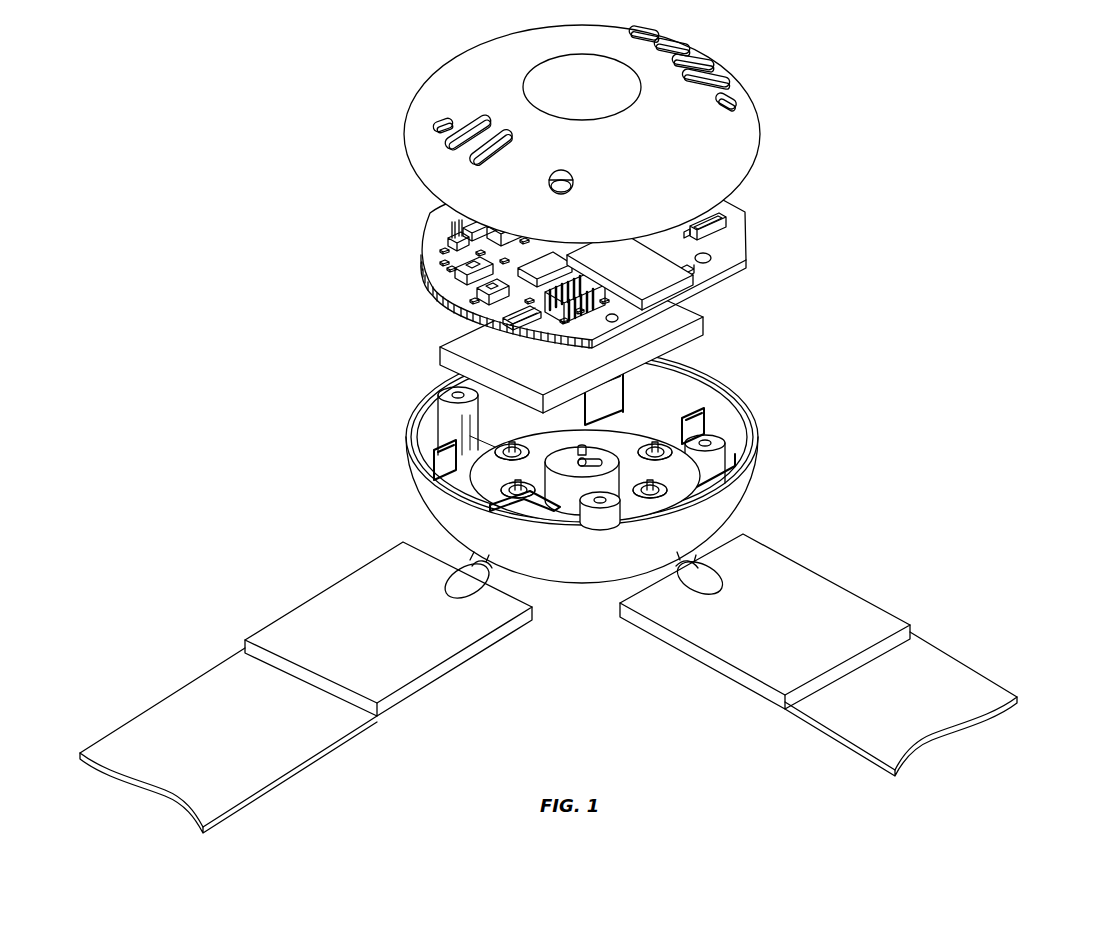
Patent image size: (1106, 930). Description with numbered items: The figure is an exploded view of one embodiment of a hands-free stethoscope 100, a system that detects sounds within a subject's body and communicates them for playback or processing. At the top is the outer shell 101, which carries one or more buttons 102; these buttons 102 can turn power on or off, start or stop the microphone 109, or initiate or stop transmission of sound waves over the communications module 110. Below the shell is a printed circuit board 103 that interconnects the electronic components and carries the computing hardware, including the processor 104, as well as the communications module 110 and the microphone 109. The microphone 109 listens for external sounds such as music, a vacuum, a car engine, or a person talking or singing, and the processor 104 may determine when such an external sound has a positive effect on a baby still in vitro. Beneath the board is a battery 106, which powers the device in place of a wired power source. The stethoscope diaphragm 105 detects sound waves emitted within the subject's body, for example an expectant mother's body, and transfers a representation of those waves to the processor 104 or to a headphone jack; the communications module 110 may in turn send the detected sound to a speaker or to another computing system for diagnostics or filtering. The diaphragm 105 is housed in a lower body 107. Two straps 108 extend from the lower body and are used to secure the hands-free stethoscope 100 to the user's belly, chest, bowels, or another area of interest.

The hands-free stethoscope 100 is at (308, 82).
The outer shell 101 is at (712, 148).
The buttons 102 is at (468, 118).
The printed circuit boards 103 is at (420, 274).
The processor 104 is at (636, 264).
The stethoscope diaphragm 105 is at (630, 435).
The battery 106 is at (470, 360).
The bottom housing 107 is at (600, 583).
The straps 108 is at (815, 597).
The microphone 109 is at (720, 228).
The communications module 110 is at (476, 300).